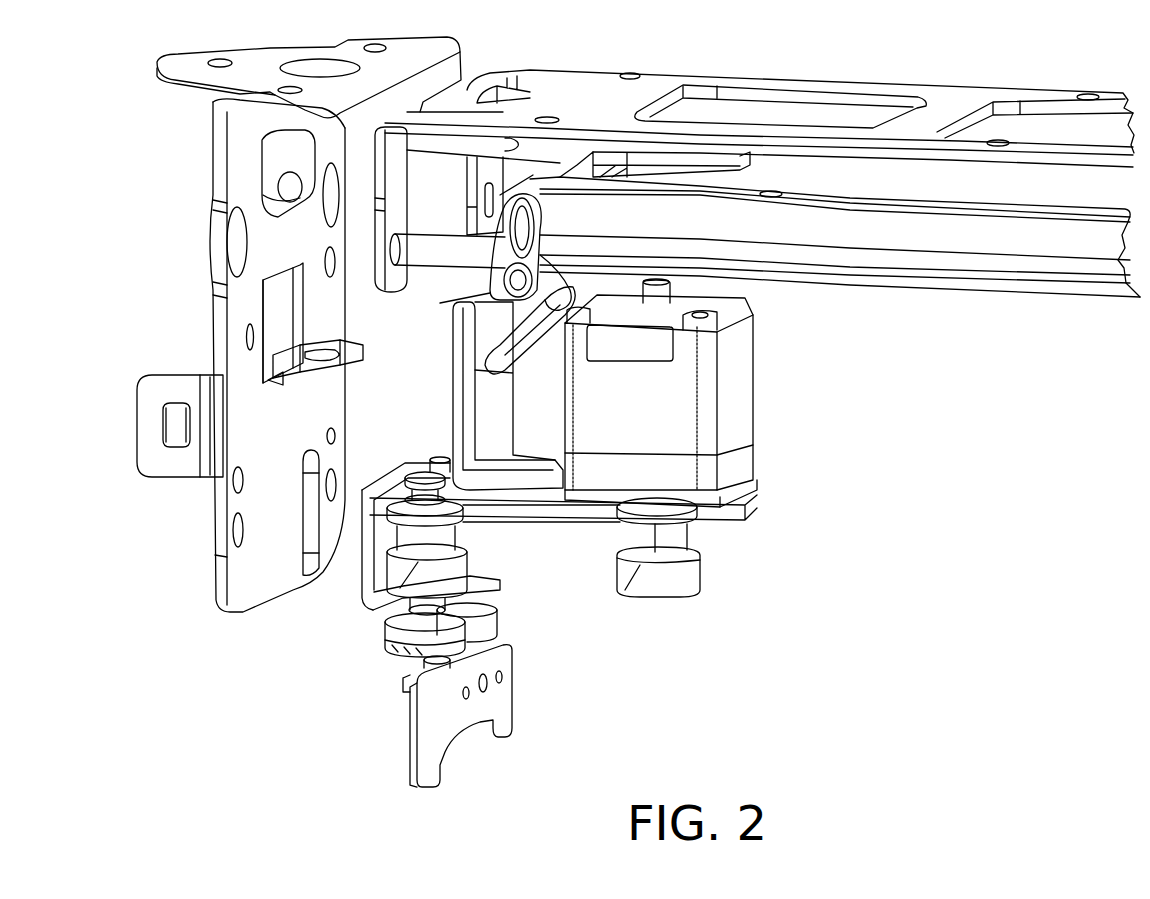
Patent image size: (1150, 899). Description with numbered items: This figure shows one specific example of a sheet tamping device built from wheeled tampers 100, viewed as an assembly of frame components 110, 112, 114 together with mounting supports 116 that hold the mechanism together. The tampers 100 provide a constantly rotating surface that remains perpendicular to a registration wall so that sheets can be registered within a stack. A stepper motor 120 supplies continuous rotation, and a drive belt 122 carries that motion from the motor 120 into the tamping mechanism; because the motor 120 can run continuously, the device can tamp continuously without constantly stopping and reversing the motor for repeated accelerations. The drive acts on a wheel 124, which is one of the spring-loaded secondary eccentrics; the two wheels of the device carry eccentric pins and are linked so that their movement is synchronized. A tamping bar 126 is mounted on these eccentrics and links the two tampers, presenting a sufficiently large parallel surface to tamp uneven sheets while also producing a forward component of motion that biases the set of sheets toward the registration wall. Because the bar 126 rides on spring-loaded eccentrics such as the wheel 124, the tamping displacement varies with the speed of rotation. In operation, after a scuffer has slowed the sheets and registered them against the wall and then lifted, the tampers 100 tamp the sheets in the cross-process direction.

The wheeled tamper 100 is at (686, 633).
The frame component 110 is at (205, 190).
The frame component 112 is at (572, 85).
The frame component 114 is at (438, 315).
The mounting support 116 is at (357, 612).
The stepper motor 120 is at (772, 386).
The drive belt 122 is at (700, 530).
The wheel 124 is at (502, 618).
The tamping bar 126 is at (518, 683).